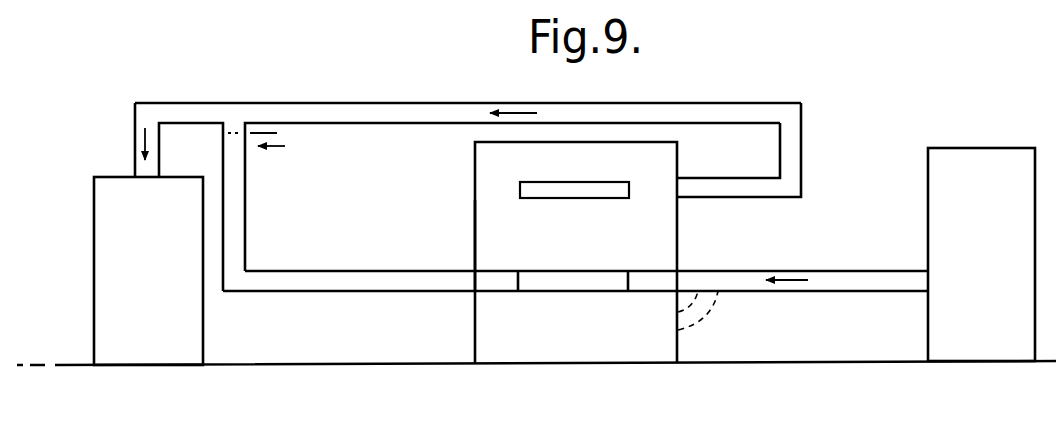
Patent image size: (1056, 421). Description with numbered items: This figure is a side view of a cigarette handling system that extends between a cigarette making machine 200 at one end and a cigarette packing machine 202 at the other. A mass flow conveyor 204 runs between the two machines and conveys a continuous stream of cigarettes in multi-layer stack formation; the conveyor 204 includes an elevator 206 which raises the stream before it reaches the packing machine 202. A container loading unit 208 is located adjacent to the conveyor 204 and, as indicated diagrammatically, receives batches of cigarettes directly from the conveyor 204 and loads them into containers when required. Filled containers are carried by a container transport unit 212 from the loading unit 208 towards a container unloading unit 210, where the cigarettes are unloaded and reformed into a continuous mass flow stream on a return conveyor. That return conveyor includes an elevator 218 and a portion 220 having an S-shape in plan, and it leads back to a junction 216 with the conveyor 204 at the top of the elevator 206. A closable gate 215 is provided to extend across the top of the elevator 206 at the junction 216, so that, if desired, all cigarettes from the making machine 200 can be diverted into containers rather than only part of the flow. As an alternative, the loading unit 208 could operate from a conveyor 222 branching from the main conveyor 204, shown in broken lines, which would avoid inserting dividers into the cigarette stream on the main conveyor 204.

The cigarette making machine 200 is at (1005, 271).
The cigarette packing machine 202 is at (172, 285).
The mass flow conveyor 204 is at (335, 293).
The elevator 206 is at (246, 208).
The container loading unit 208 is at (637, 260).
The container unloading unit 210 is at (494, 187).
The container transport unit 212 is at (467, 240).
The closable gate 215 is at (262, 133).
The junction 216 is at (233, 120).
The elevator 218 is at (797, 152).
The S-shaped portion 220 is at (583, 110).
The branch conveyor 222 is at (712, 305).